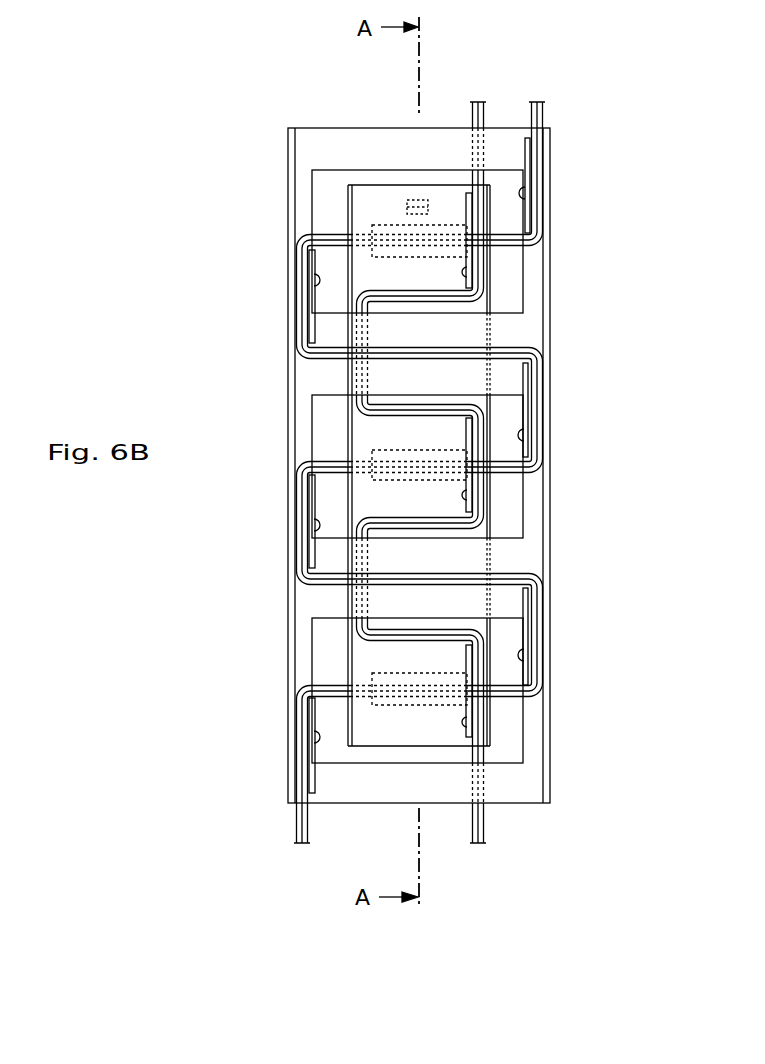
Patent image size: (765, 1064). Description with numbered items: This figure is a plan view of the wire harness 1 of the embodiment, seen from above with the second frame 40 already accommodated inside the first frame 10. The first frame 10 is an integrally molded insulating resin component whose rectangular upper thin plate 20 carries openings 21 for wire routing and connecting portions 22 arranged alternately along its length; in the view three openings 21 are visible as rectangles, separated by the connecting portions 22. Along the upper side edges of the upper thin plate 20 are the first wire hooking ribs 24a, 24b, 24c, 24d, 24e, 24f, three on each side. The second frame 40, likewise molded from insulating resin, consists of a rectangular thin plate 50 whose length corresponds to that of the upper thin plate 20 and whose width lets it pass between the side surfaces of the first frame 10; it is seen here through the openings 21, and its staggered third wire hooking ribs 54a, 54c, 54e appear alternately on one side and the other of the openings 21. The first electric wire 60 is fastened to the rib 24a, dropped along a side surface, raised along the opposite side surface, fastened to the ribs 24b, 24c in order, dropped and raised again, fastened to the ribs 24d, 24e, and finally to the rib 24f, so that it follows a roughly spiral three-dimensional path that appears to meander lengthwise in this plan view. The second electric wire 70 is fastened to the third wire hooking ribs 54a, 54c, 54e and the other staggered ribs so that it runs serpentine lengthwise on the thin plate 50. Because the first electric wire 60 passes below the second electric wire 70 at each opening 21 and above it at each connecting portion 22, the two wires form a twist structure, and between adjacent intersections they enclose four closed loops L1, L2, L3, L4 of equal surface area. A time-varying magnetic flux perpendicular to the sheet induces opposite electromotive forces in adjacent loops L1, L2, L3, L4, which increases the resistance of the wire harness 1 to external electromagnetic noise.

The wire harness 1 is at (181, 304).
The first frame 10 is at (432, 130).
The upper thin plate 20 is at (309, 128).
The opening 21 is at (325, 193).
The connecting portion 22 is at (332, 376).
The first wire hooking rib 24a is at (314, 732).
The first wire hooking rib 24b is at (526, 657).
The first wire hooking rib 24c is at (314, 520).
The first wire hooking rib 24d is at (526, 437).
The first wire hooking rib 24e is at (314, 275).
The first wire hooking rib 24f is at (527, 198).
The second frame 40 is at (443, 186).
The thin plate 50 is at (385, 185).
The third wire hooking rib 54a is at (470, 728).
The third wire hooking rib 54c is at (470, 501).
The third wire hooking rib 54e is at (470, 278).
The first electric wire 60 is at (545, 110).
The second electric wire 70 is at (486, 114).
The closed loop L1 is at (507, 632).
The closed loop L2 is at (325, 491).
The closed loop L3 is at (507, 407).
The closed loop L4 is at (330, 330).